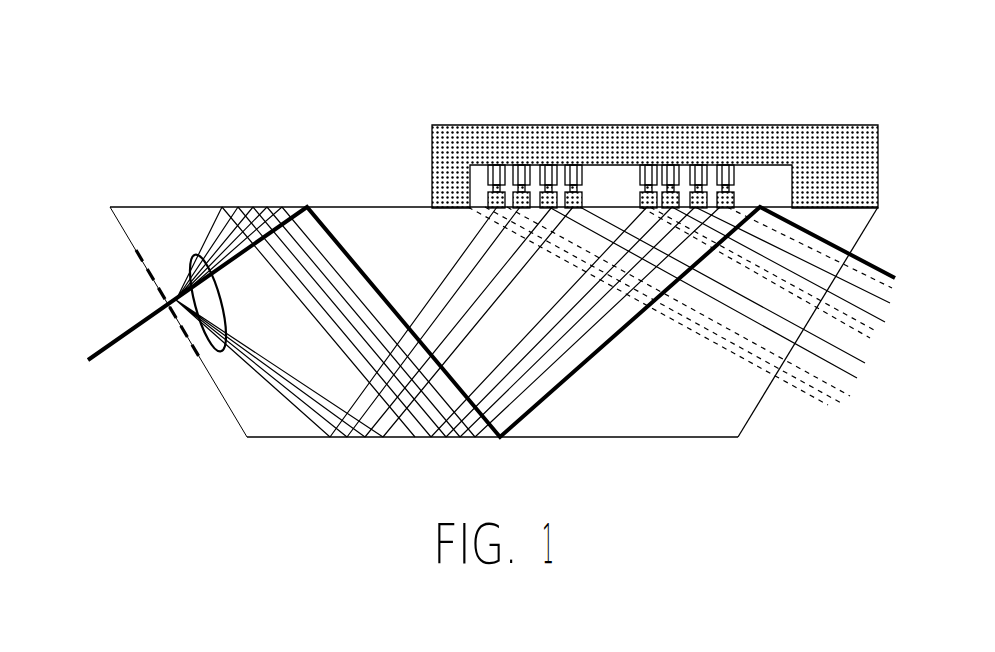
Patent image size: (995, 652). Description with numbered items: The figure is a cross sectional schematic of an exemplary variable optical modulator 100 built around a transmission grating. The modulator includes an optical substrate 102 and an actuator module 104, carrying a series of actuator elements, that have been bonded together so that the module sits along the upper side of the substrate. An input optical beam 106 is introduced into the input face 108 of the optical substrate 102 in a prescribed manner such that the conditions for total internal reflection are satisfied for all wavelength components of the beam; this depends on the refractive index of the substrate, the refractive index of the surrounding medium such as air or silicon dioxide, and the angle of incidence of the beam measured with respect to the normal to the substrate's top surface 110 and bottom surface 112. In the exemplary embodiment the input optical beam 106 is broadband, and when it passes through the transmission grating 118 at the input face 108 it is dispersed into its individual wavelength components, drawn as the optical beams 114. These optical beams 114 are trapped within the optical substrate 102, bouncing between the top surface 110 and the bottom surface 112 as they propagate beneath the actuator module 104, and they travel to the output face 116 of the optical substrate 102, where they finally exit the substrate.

The variable optical modulator 100 is at (371, 106).
The optical substrate 102 is at (262, 421).
The actuator module 104 is at (700, 138).
The input optical beam 106 is at (118, 334).
The input face 108 is at (207, 372).
The top surface 110 is at (372, 210).
The bottom surface 112 is at (615, 440).
The optical beams 114 is at (224, 307).
The output face 116 is at (765, 402).
The transmission grating 118 is at (152, 281).